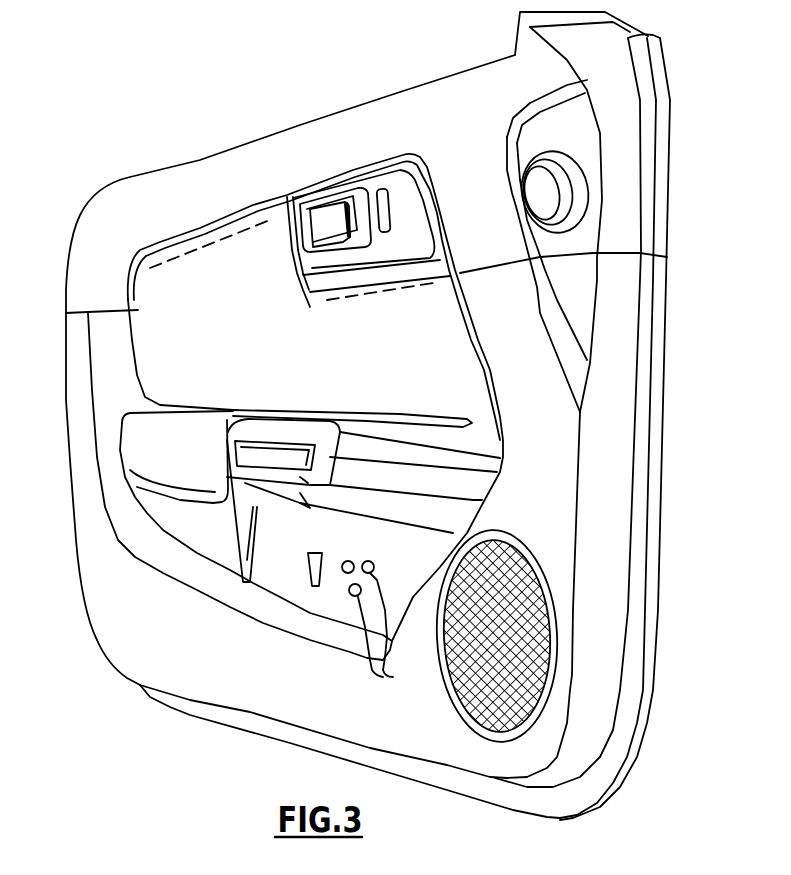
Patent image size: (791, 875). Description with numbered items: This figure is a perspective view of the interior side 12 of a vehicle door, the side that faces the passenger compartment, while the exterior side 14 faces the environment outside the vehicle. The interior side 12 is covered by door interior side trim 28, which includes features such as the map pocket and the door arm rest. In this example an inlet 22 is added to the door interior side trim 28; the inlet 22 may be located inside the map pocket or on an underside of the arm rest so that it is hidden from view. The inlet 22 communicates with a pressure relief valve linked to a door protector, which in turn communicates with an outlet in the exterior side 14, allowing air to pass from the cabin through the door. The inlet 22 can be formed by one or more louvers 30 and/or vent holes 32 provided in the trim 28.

The interior side 12 is at (107, 597).
The exterior side 14 is at (657, 537).
The inlet 22 is at (300, 577).
The door interior side trim 28 is at (197, 490).
The louvers 30 is at (313, 590).
The vent holes 32 is at (384, 629).